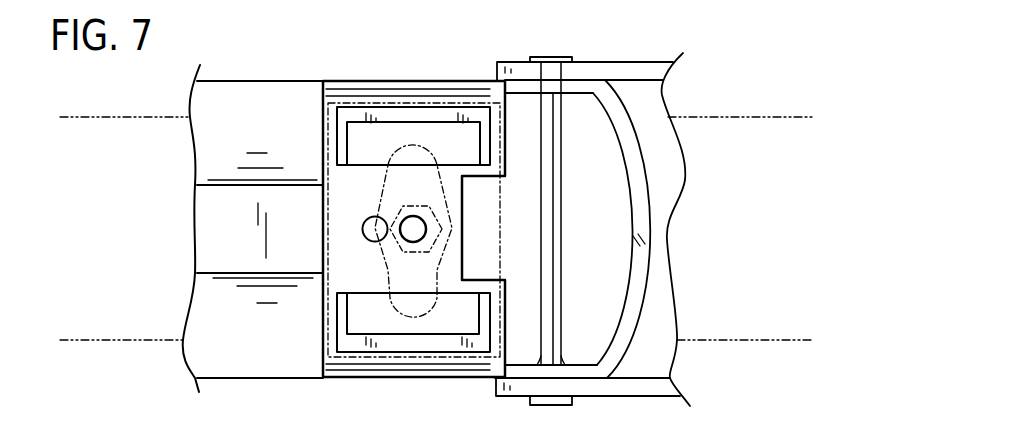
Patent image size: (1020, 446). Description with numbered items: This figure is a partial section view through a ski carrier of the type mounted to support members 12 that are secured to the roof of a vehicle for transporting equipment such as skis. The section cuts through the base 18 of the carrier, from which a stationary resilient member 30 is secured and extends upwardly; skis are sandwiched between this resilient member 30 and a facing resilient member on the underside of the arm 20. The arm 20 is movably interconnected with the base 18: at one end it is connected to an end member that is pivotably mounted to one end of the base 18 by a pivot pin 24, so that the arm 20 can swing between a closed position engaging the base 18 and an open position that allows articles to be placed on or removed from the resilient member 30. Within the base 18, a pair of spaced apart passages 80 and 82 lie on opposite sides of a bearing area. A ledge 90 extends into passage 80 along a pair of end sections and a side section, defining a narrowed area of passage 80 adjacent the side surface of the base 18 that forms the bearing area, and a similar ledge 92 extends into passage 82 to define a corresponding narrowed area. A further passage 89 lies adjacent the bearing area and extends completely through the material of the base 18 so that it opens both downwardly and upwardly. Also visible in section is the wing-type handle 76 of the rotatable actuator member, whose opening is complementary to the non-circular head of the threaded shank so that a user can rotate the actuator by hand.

The support member 12 is at (125, 118).
The stationary resilient member 30 is at (200, 138).
The base 18 is at (340, 81).
The wing-type handle 76 is at (335, 297).
The passage 80 is at (383, 132).
The ledge 90 is at (423, 110).
The passage 82 is at (450, 322).
The ledge 92 is at (400, 345).
The passage 89 is at (363, 224).
The arm 20 is at (646, 62).
The pivot pin 24 is at (571, 119).